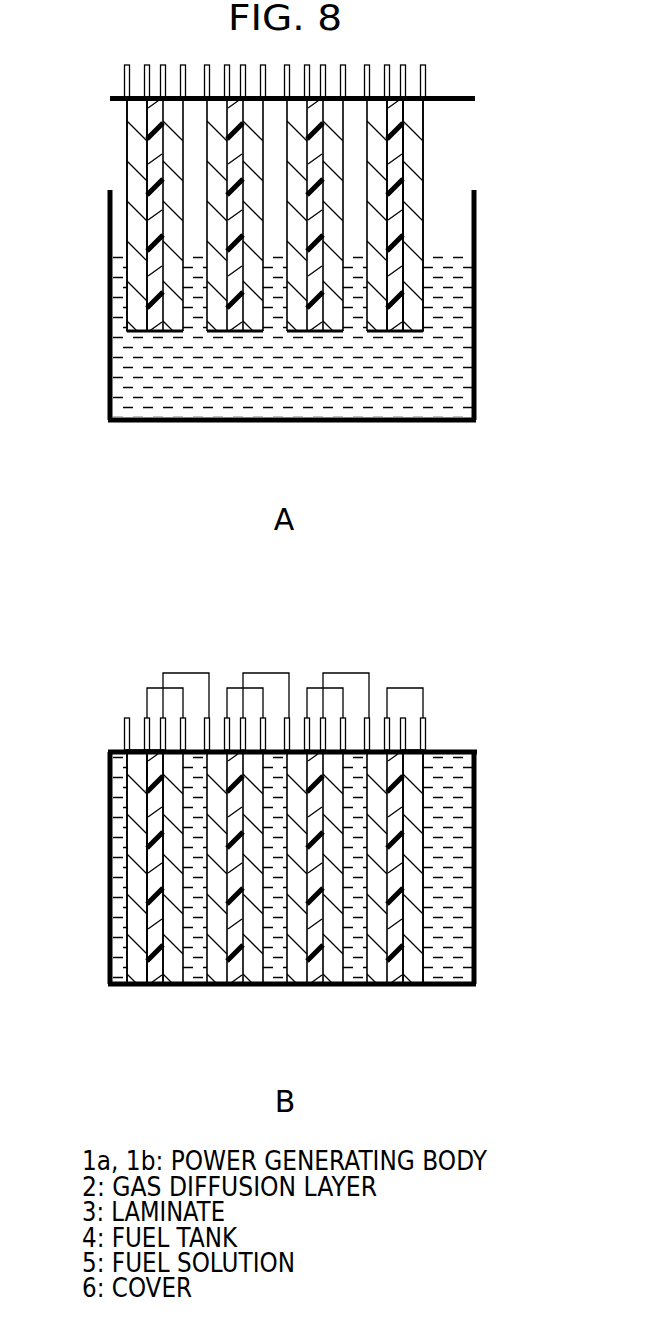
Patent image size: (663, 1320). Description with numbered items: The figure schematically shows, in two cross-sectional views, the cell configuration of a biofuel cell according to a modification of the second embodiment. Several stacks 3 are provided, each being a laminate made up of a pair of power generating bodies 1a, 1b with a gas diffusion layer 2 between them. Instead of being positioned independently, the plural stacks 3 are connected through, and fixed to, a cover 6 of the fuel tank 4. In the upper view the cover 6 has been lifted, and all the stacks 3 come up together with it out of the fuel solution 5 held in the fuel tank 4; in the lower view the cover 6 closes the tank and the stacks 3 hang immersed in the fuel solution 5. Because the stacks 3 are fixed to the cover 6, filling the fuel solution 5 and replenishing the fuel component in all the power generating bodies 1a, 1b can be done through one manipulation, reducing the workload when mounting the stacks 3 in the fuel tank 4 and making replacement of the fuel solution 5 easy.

The power generating body 1a is at (130, 157).
The power generating body 1b is at (417, 158).
The gas diffusion layer 2 is at (397, 217).
The stack 3 is at (397, 347).
The fuel tank 4 is at (474, 335).
The fuel solution 5 is at (124, 370).
The cover 6 is at (457, 97).